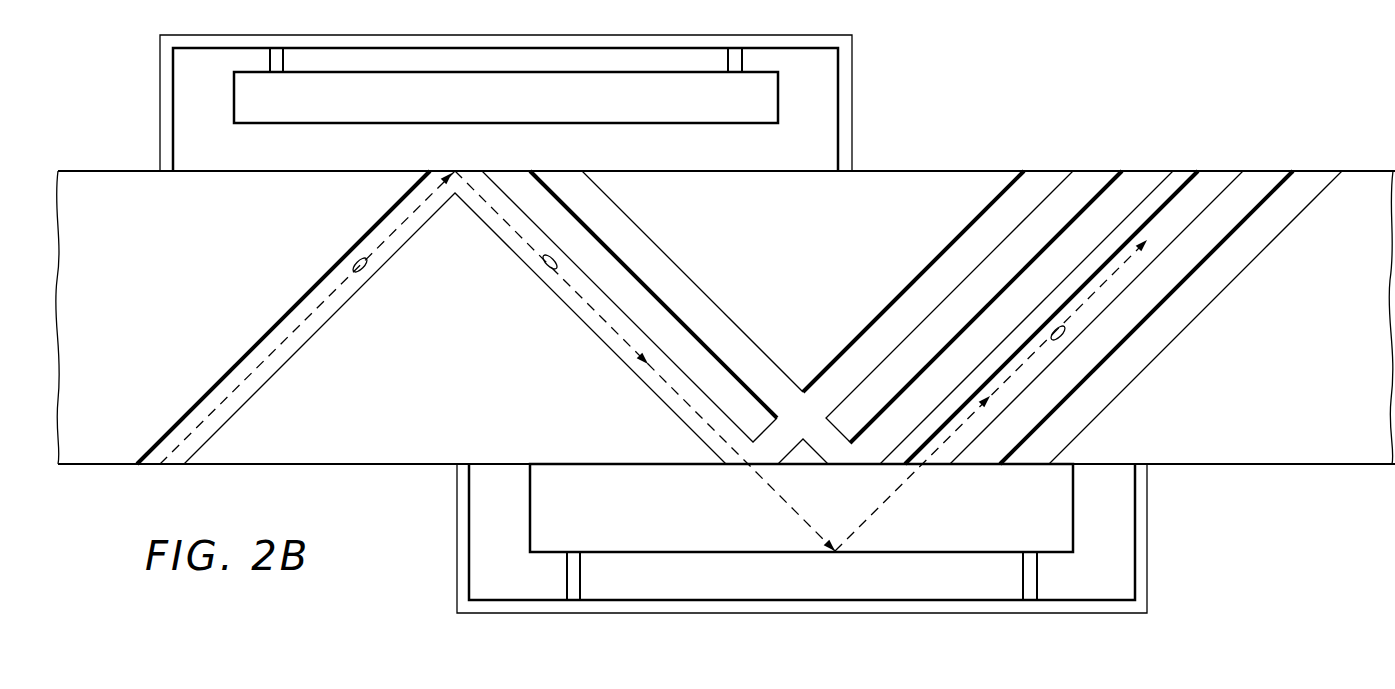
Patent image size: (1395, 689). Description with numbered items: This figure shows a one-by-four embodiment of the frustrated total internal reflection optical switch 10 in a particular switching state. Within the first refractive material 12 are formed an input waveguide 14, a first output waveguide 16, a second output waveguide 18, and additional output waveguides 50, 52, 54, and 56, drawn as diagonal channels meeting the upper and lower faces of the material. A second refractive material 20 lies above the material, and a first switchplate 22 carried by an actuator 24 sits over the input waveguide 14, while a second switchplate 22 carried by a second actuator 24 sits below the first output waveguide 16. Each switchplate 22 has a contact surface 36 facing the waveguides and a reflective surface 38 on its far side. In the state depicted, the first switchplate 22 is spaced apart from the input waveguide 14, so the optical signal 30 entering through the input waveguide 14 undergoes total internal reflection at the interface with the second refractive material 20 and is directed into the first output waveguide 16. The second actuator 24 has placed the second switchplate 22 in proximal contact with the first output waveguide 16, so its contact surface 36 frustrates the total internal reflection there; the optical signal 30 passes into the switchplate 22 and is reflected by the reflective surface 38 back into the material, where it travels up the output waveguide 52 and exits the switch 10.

The optical switch 10 is at (1166, 56).
The first refractive material 12 is at (137, 241).
The input waveguide 14 is at (322, 328).
The first output waveguide 16 is at (590, 332).
The second output waveguide 18 is at (728, 312).
The second refractive material 20 is at (258, 141).
The switchplate 22 is at (521, 112).
The actuator 24 is at (853, 110).
The optical signal 30 is at (367, 271).
The contact surface 36 is at (603, 462).
The reflective surface 38 is at (1060, 556).
The output waveguide 50 is at (913, 280).
The output waveguide 52 is at (1198, 223).
The output waveguide 54 is at (1023, 270).
The output waveguide 56 is at (1195, 322).